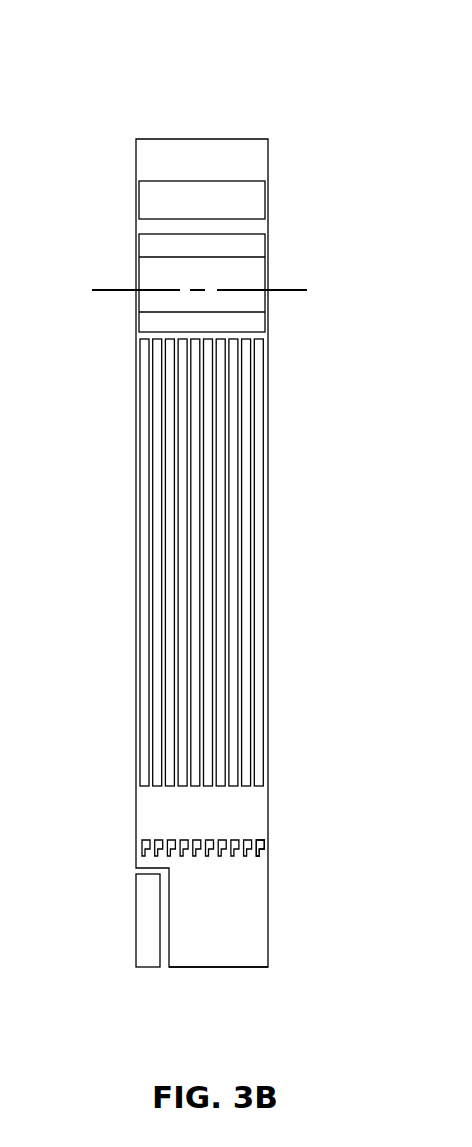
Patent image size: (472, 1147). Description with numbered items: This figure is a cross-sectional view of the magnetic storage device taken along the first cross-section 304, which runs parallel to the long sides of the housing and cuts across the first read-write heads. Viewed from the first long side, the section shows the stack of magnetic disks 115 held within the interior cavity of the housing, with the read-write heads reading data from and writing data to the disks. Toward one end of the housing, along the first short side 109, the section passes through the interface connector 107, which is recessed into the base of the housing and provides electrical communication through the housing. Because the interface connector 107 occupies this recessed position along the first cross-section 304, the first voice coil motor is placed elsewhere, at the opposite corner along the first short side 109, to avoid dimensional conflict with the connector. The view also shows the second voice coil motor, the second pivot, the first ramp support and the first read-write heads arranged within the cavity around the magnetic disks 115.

The first cross-section 304 is at (207, 53).
The magnetic disk 115 is at (148, 475).
The interface connector 107 is at (150, 919).
The first short side 109 is at (202, 967).